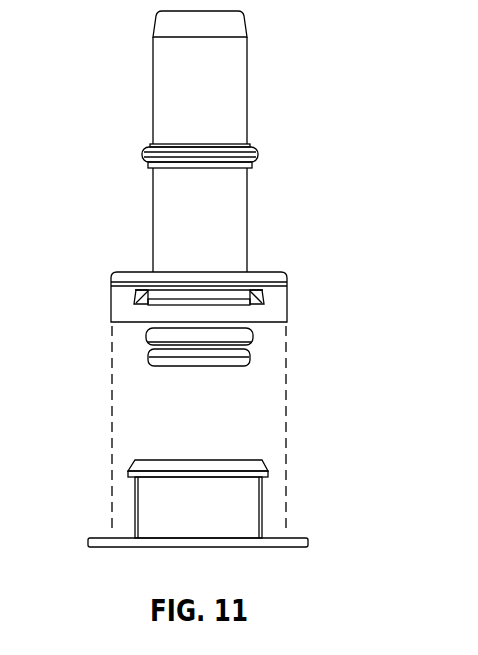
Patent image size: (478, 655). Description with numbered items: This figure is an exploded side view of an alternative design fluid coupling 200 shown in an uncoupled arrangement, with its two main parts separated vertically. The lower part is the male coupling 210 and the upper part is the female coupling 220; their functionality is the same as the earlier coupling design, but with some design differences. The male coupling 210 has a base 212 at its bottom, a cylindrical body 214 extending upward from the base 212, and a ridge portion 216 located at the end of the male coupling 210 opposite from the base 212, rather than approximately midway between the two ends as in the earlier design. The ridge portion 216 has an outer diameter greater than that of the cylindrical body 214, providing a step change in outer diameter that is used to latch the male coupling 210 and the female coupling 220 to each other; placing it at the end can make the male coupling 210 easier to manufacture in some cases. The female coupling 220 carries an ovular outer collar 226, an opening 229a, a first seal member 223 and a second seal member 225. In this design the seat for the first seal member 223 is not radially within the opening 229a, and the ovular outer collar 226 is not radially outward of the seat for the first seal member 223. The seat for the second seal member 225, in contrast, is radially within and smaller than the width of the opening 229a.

The fluid coupling 200 is at (346, 248).
The male coupling 210 is at (294, 491).
The base 212 is at (296, 538).
The cylindrical body 214 is at (137, 519).
The ridge portion 216 is at (130, 474).
The female coupling 220 is at (140, 250).
The first seal member 223 is at (148, 330).
The second seal member 225 is at (147, 292).
The ovular outer collar 226 is at (288, 290).
The opening 229a is at (258, 293).